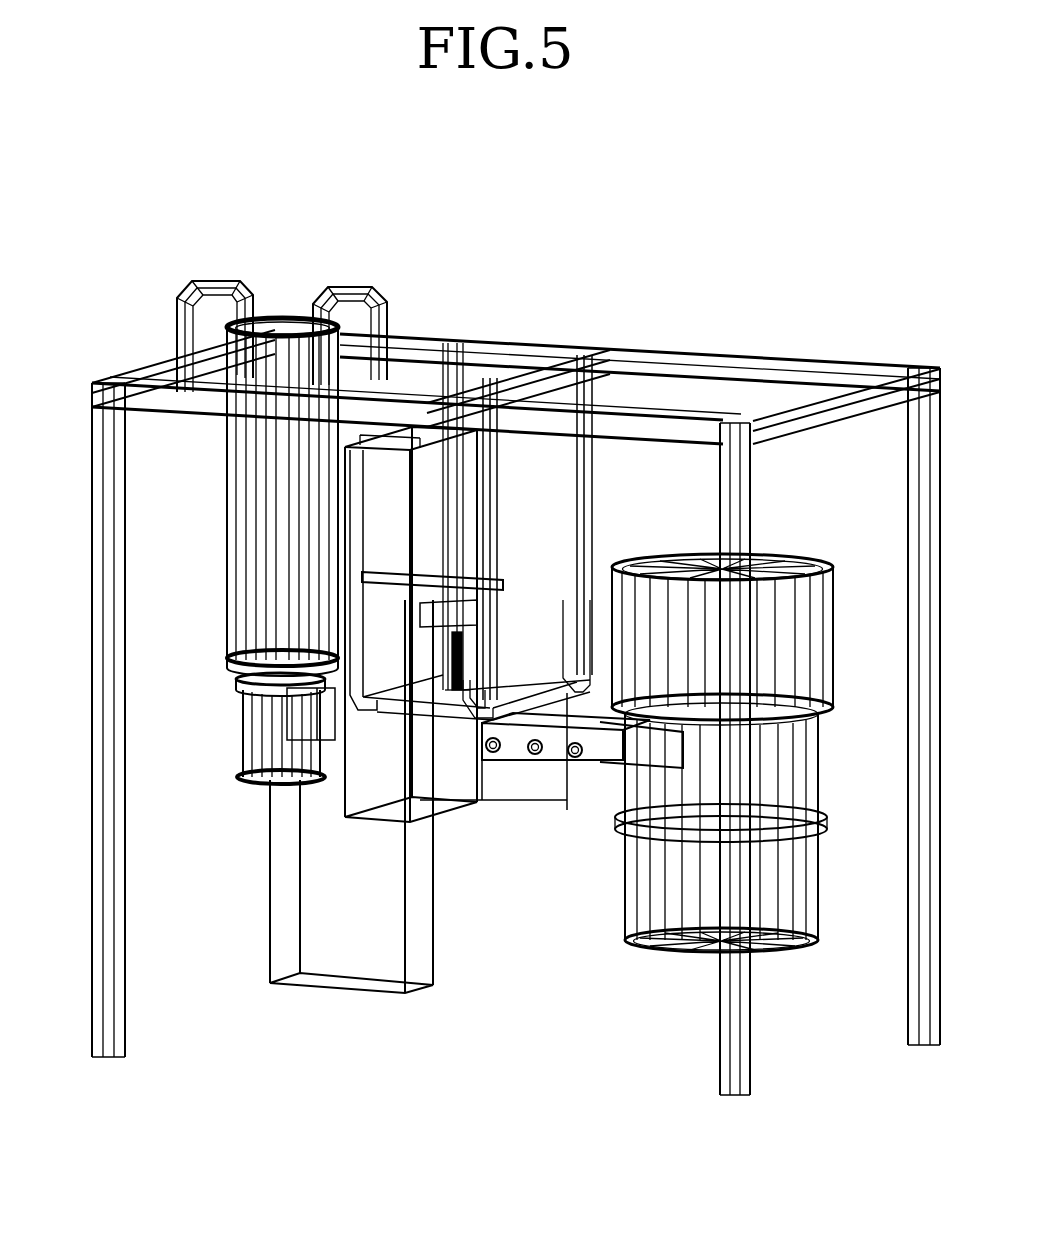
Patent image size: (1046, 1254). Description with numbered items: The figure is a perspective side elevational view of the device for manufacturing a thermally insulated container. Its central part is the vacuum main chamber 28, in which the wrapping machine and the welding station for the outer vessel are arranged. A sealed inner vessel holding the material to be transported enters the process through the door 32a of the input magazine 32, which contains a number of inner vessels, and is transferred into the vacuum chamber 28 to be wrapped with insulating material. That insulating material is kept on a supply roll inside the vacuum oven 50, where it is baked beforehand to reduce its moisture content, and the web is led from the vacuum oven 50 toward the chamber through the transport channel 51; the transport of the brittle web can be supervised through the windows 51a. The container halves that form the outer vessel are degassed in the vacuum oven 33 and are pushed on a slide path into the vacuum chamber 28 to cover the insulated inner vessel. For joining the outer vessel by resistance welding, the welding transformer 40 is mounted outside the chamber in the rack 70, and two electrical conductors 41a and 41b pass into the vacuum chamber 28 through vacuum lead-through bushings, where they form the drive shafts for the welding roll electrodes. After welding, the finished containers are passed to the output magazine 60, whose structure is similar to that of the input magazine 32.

The vacuum main chamber 28 is at (456, 790).
The input magazine 32 is at (300, 934).
The door 32a is at (305, 722).
The vacuum oven 33 is at (235, 325).
The welding transformer 40 is at (478, 568).
The electrical conductor 41a is at (470, 583).
The electrical conductor 41b is at (465, 662).
The vacuum oven 50 is at (765, 565).
The transport channel 51 is at (598, 745).
The windows 51a is at (572, 762).
The output magazine 60 is at (427, 463).
The rack 70 is at (737, 368).